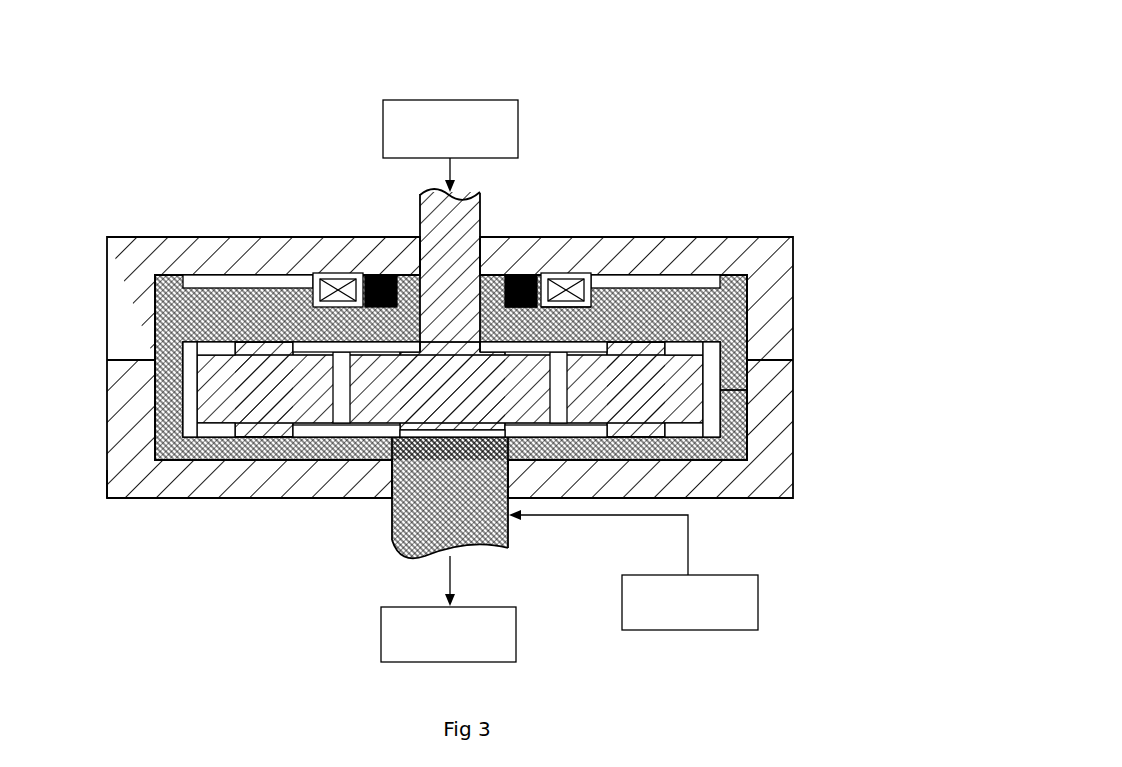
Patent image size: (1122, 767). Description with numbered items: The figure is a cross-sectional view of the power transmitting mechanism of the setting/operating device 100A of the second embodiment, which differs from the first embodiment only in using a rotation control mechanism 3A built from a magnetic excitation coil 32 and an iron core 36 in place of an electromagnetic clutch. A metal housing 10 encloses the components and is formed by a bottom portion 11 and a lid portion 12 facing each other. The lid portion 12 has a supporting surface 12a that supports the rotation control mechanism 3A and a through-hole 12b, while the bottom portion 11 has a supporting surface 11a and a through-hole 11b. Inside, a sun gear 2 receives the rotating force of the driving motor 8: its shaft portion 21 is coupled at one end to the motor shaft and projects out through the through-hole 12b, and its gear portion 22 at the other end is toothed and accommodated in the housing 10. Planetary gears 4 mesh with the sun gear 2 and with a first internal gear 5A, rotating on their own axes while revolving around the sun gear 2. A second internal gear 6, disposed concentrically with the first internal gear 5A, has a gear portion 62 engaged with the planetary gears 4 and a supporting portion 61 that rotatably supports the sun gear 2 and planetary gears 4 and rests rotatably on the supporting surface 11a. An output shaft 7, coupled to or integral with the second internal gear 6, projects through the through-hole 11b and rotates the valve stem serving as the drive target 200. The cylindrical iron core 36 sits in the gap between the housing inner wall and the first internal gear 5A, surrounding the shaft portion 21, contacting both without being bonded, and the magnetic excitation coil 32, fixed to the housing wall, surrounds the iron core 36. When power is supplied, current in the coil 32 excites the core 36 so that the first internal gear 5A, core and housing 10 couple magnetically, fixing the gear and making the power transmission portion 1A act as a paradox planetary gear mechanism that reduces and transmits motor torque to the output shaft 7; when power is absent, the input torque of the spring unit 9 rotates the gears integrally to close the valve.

The setting/operating device 100A is at (515, 331).
The power transmission portion 1A is at (464, 354).
The sun gear 2 is at (535, 250).
The shaft portion 21 is at (531, 338).
The gear portion 22 is at (592, 283).
The rotation control mechanism 3A is at (452, 235).
The magnetic excitation coil 32 is at (337, 272).
The iron core 36 is at (380, 275).
The planetary gears 4 is at (153, 400).
The first internal gear 5A is at (443, 362).
The second internal gear 6 is at (510, 370).
The supporting portion 61 is at (748, 460).
The gear portion 62 is at (740, 428).
The output shaft 7 is at (392, 522).
The driving motor 8 is at (518, 124).
The spring unit 9 is at (758, 610).
The housing 10 is at (480, 336).
The bottom portion 11 is at (466, 450).
The supporting surface 11a is at (137, 452).
The through-hole 11b is at (392, 505).
The lid portion 12 is at (483, 245).
The supporting surface 12a is at (777, 237).
The through-hole 12b is at (482, 238).
The drive target 200 is at (381, 631).